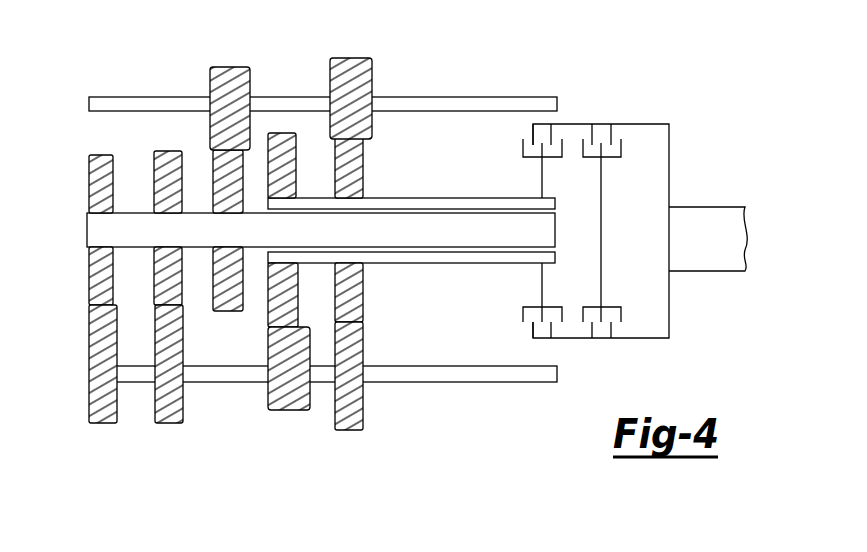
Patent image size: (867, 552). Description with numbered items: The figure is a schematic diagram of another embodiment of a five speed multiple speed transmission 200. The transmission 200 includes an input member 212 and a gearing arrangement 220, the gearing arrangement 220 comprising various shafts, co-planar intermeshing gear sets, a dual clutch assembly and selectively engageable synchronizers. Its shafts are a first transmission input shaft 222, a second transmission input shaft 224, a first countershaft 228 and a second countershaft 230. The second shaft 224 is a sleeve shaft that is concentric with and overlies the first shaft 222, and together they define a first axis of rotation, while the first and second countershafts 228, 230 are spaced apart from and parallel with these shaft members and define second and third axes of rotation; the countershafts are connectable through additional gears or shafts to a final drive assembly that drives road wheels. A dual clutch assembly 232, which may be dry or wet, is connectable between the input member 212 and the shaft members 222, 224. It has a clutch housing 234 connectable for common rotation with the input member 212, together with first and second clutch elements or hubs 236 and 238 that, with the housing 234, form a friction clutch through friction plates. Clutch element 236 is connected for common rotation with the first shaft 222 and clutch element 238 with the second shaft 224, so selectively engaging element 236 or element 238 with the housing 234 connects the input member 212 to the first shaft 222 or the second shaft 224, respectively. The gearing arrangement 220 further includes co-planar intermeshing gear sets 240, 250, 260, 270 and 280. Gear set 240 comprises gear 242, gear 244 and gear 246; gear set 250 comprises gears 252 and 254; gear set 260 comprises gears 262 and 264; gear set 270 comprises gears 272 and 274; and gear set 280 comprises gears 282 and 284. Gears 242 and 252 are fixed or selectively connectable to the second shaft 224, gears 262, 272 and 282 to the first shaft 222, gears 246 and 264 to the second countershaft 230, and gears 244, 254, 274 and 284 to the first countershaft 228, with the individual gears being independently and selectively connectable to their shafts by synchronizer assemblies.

The multiple speed transmission 200 is at (408, 262).
The input member 212 is at (727, 207).
The gearing arrangement 220 is at (323, 222).
The first transmission input shaft 222 is at (547, 229).
The second transmission input shaft 224 is at (475, 198).
The first countershaft 228 is at (527, 382).
The second countershaft 230 is at (522, 97).
The dual clutch assembly 232 is at (620, 202).
The clutch housing 234 is at (669, 316).
The first clutch element 236 is at (602, 250).
The second clutch element 238 is at (540, 279).
The first co-planar gear set 240 is at (384, 249).
The gear 242 is at (364, 176).
The gear 244 is at (365, 393).
The gear 246 is at (345, 62).
The second co-planar gear set 250 is at (280, 308).
The gear 252 is at (267, 313).
The gear 254 is at (303, 410).
The third co-planar gear set 260 is at (243, 241).
The gear 262 is at (213, 288).
The gear 264 is at (238, 67).
The fourth co-planar gear set 270 is at (170, 306).
The gear 272 is at (155, 175).
The gear 274 is at (155, 328).
The fifth co-planar gear set 280 is at (78, 331).
The gear 282 is at (90, 185).
The gear 284 is at (90, 336).